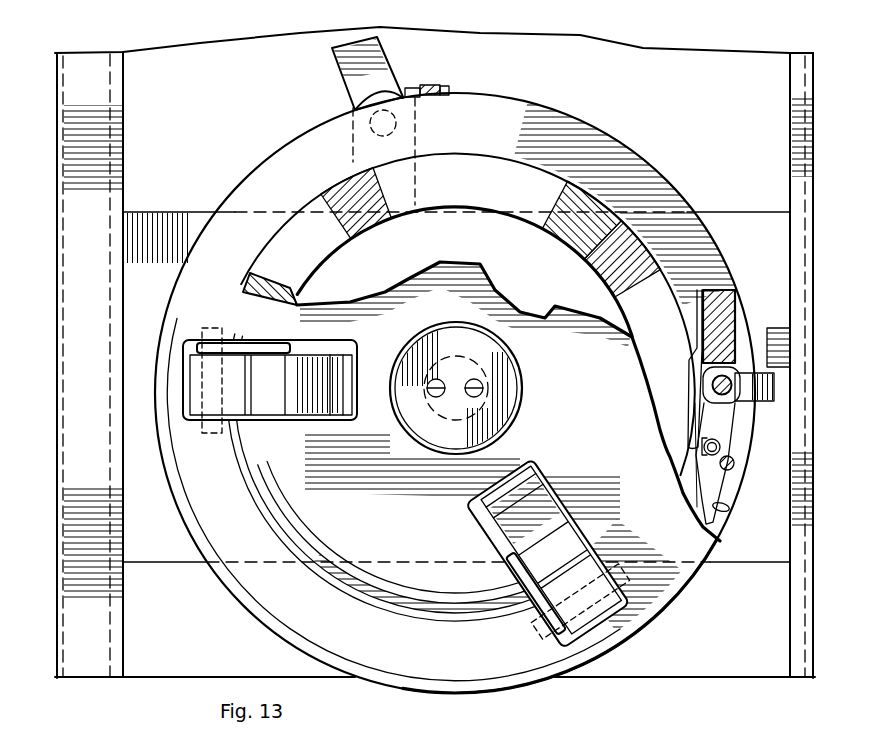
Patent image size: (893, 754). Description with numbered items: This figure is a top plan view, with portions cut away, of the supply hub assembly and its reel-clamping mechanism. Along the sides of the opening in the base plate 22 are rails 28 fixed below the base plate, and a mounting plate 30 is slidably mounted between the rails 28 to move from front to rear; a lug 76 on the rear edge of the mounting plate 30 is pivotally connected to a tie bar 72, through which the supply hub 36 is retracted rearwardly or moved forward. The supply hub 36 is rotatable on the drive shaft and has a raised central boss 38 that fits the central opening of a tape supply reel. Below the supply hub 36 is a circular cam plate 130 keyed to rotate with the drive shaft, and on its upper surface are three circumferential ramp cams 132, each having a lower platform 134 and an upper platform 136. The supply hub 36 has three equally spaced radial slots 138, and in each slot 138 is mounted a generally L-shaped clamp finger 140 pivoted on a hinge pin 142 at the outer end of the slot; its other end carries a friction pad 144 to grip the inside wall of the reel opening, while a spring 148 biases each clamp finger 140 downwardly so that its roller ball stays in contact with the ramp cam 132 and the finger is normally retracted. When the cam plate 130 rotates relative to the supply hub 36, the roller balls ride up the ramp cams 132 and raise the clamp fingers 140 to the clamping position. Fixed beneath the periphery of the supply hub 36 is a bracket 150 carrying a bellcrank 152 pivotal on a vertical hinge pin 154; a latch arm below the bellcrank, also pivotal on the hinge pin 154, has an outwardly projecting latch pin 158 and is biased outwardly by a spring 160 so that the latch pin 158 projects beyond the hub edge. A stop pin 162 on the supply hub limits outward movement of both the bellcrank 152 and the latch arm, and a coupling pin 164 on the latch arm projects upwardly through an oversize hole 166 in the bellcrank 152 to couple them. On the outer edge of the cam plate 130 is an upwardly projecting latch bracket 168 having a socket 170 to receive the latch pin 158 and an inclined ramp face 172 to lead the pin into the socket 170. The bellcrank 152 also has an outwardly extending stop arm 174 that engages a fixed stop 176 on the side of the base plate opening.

The base plate 22 is at (88, 62).
The rails 28 is at (110, 104).
The mounting plate 30 is at (193, 218).
The supply hub 36 is at (273, 602).
The central boss 38 is at (375, 557).
The tie bar 72 is at (338, 62).
The lug 76 is at (368, 98).
The cam plate 130 is at (580, 145).
The ramp cams 132 is at (433, 168).
The lower platform 134 is at (567, 227).
The upper platform 136 is at (262, 283).
The radial slots 138 is at (335, 340).
The clamp finger 140 is at (255, 403).
The hinge pin 142 is at (207, 437).
The friction pad 144 is at (323, 390).
The spring 148 is at (253, 350).
The bracket 150 is at (730, 300).
The bellcrank 152 is at (700, 484).
The hinge pin 154 is at (710, 385).
The latch pin 158 is at (730, 512).
The spring 160 is at (692, 352).
The stop pin 162 is at (733, 466).
The coupling pin 164 is at (723, 448).
The oversize hole 166 is at (702, 438).
The latch bracket 168 is at (412, 88).
The socket 170 is at (428, 87).
The inclined ramp face 172 is at (450, 92).
The stop arm 174 is at (763, 400).
The fixed stop 176 is at (783, 333).